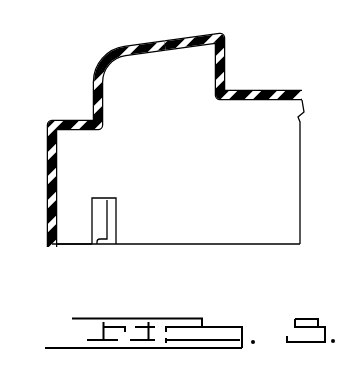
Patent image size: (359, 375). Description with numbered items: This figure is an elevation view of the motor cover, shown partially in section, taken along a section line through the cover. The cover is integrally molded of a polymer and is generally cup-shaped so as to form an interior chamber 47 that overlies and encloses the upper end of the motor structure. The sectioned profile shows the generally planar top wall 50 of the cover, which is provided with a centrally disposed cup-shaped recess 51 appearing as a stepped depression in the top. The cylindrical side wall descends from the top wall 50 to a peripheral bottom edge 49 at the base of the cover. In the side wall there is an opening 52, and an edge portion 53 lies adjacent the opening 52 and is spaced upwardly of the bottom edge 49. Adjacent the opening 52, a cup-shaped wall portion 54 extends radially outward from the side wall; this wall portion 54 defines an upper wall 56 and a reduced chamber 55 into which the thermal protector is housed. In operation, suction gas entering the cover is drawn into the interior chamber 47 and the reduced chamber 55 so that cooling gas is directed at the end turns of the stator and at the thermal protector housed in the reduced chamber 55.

The interior chamber 47 is at (292, 117).
The peripheral bottom edge 49 is at (205, 244).
The top wall 50 is at (140, 42).
The cup-shaped recess 51 is at (242, 72).
The opening 52 is at (99, 211).
The edge portion 53 is at (72, 244).
The cup-shaped wall portion 54 is at (48, 208).
The reduced chamber 55 is at (77, 156).
The upper wall 56 is at (77, 120).